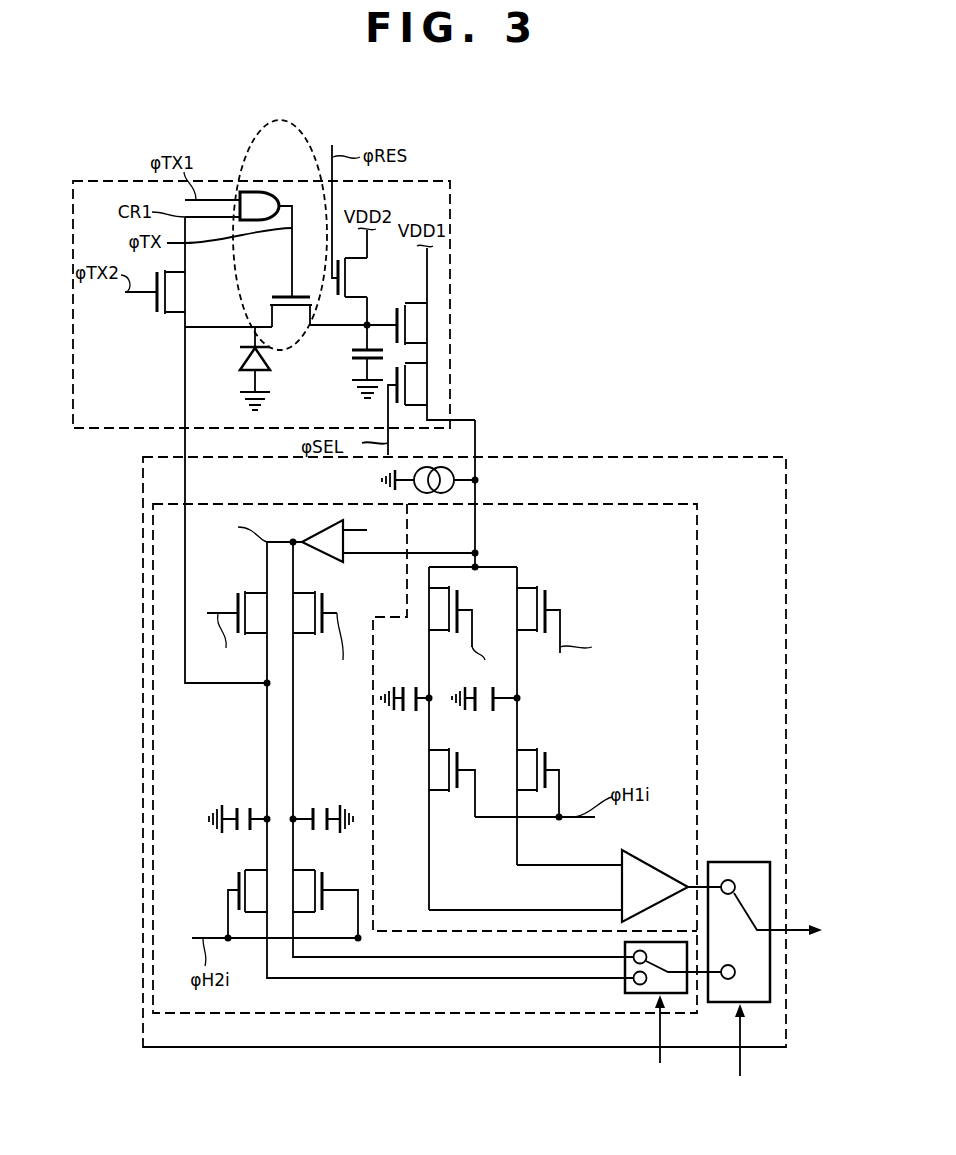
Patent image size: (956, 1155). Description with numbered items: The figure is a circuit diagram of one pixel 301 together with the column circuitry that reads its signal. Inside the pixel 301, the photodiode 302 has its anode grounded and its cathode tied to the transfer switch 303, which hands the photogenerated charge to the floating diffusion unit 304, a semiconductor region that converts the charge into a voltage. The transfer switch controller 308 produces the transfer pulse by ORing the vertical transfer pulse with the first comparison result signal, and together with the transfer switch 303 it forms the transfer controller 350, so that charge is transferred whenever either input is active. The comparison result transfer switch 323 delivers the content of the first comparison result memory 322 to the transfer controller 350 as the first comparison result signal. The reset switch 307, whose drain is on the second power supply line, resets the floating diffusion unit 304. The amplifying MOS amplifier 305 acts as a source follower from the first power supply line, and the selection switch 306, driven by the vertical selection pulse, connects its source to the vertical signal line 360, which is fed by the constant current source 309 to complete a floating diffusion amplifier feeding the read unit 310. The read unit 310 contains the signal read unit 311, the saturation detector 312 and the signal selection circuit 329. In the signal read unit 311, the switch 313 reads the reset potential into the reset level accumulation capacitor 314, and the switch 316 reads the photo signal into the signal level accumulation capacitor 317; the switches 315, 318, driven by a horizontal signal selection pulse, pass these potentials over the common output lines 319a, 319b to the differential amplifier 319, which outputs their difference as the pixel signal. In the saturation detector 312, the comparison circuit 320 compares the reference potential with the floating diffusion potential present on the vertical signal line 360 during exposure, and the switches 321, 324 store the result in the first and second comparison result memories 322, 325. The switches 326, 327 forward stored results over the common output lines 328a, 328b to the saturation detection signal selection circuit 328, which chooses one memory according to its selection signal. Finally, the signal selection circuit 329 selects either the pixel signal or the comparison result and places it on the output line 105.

The pixel 301 is at (452, 197).
The photodiode 302 is at (242, 375).
The transfer switch 303 is at (185, 327).
The floating diffusion unit 304 is at (352, 352).
The amplifying MOS amplifier 305 is at (410, 338).
The selection switch 306 is at (410, 400).
The reset switch 307 is at (350, 277).
The transfer switch controller 308 is at (270, 192).
The constant current source 309 is at (434, 468).
The signal read unit 310 is at (652, 457).
The signal read unit 311 is at (698, 556).
The saturation detector 312 is at (370, 1047).
The switch 313 is at (442, 610).
The reset level accumulation capacitor 314 is at (405, 712).
The switch 315 is at (445, 793).
The switch 316 is at (548, 592).
The signal level accumulation capacitor 317 is at (485, 712).
The switch 318 is at (535, 748).
The differential amplifier 319 is at (657, 865).
The common output line 319a is at (540, 865).
The common output line 319b is at (530, 910).
The comparison circuit 320 is at (313, 520).
The switch 321 is at (238, 597).
The first comparison result memory 322 is at (235, 806).
The comparison result transfer switch 323 is at (157, 302).
The switch 324 is at (325, 600).
The second comparison result memory 325 is at (322, 806).
The switch 326 is at (237, 877).
The switch 327 is at (327, 877).
The saturation detection signal selection circuit 328 is at (630, 995).
The common output line 328a is at (508, 957).
The common output line 328b is at (508, 978).
The signal selection circuit 329 is at (738, 862).
The transfer controller 350 is at (281, 120).
The vertical signal line 360 is at (476, 430).
The output line 105 is at (803, 936).